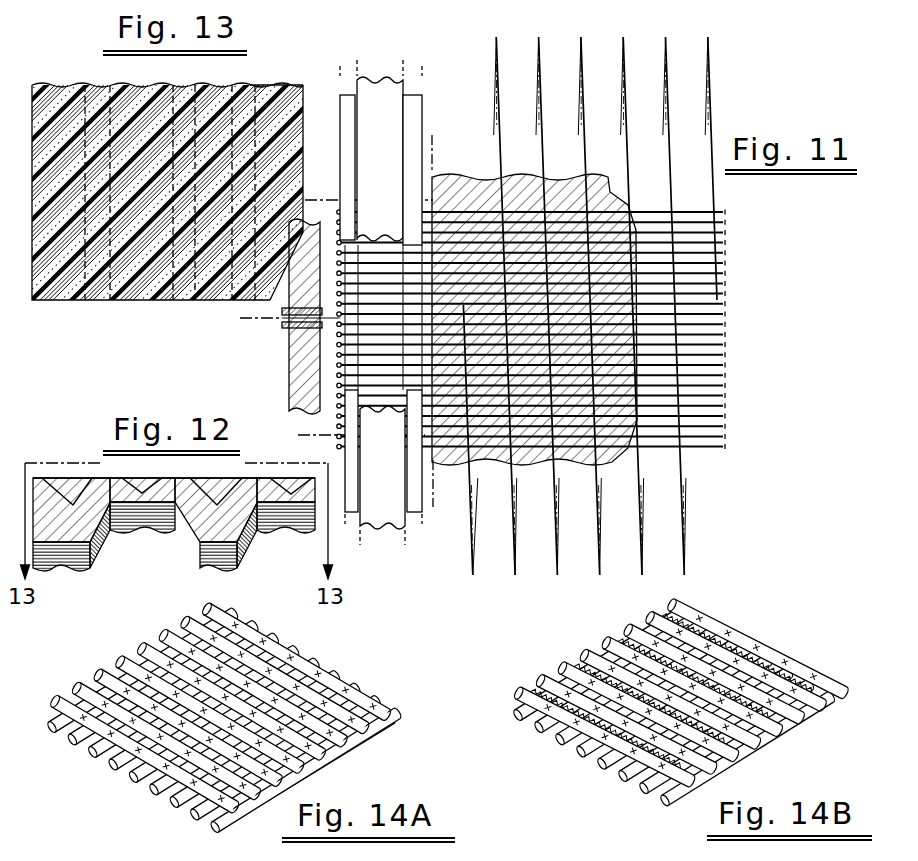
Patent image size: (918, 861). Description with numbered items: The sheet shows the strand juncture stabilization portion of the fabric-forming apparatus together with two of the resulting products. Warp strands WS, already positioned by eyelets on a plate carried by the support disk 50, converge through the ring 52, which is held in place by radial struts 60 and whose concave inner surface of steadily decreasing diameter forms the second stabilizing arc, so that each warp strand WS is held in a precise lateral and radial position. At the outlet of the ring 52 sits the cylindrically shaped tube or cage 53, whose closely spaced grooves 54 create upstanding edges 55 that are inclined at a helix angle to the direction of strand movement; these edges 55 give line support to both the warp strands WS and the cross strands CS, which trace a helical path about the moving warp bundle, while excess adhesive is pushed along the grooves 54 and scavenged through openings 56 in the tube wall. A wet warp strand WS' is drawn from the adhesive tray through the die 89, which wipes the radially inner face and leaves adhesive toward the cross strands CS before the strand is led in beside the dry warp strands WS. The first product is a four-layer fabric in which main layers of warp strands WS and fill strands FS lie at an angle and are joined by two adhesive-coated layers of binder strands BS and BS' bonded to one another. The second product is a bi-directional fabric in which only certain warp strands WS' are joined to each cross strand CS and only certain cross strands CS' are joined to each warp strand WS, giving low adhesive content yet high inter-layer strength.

In FIG. 11, the support disk 50 is at (296, 372).
In FIG. 11, the ring 52 is at (415, 125).
In FIG. 13, the cylindrically shaped tube or cage 53 is at (63, 300).
In FIG. 12, the cylindrically shaped tube or cage 53 is at (74, 556).
In FIG. 11, the cylindrically shaped tube or cage 53 is at (451, 464).
In FIG. 13, the grooves 54 is at (77, 92).
In FIG. 12, the grooves 54 is at (118, 488).
In FIG. 13, the upstanding edges 55 is at (254, 90).
In FIG. 12, the upstanding edges 55 is at (158, 478).
In FIG. 11, the upstanding edges 55 is at (460, 178).
In FIG. 13, the openings 56 is at (173, 90).
In FIG. 12, the openings 56 is at (150, 506).
In FIG. 11, the radial struts 60 is at (390, 176).
In FIG. 11, the die 89 is at (282, 330).
In FIG. 11, the cross strands CS is at (590, 306).
In FIG. 14B, the cross strands CS is at (653, 694).
In FIG. 14B, the cross strands (selected ones) CS' is at (737, 742).
In FIG. 14A, the warp strands WS is at (220, 708).
In FIG. 14B, the warp strands WS is at (692, 680).
In FIG. 14B, the wet warp strands WS' is at (686, 697).
In FIG. 14A, the binder strands BS is at (235, 734).
In FIG. 14A, the binder strands (second layer) BS' is at (326, 770).
In FIG. 14A, the fill strands FS is at (367, 740).